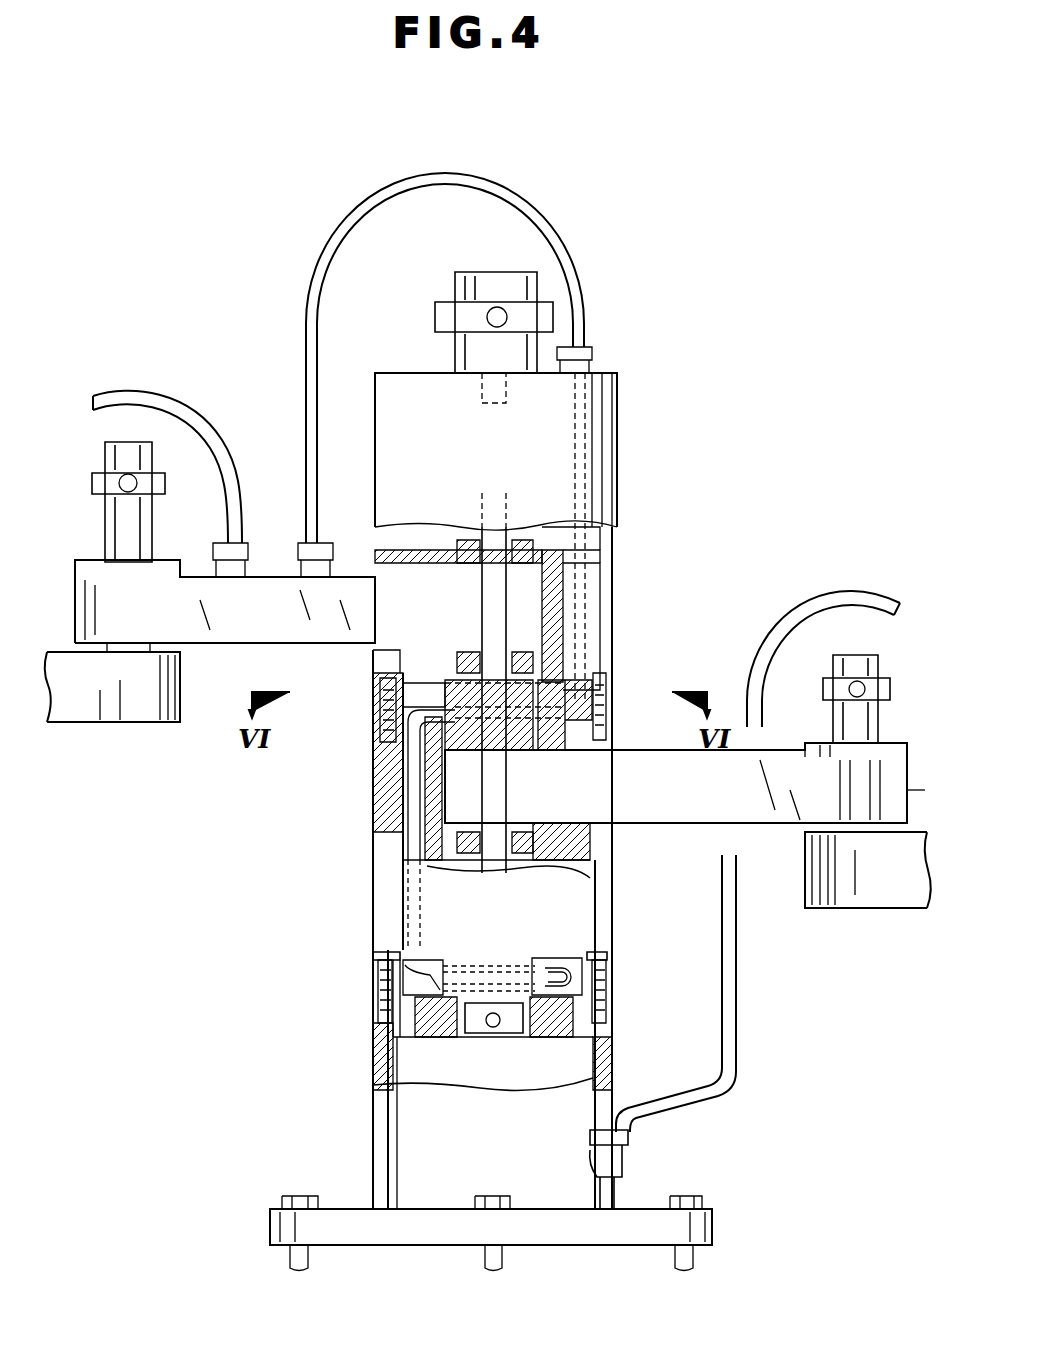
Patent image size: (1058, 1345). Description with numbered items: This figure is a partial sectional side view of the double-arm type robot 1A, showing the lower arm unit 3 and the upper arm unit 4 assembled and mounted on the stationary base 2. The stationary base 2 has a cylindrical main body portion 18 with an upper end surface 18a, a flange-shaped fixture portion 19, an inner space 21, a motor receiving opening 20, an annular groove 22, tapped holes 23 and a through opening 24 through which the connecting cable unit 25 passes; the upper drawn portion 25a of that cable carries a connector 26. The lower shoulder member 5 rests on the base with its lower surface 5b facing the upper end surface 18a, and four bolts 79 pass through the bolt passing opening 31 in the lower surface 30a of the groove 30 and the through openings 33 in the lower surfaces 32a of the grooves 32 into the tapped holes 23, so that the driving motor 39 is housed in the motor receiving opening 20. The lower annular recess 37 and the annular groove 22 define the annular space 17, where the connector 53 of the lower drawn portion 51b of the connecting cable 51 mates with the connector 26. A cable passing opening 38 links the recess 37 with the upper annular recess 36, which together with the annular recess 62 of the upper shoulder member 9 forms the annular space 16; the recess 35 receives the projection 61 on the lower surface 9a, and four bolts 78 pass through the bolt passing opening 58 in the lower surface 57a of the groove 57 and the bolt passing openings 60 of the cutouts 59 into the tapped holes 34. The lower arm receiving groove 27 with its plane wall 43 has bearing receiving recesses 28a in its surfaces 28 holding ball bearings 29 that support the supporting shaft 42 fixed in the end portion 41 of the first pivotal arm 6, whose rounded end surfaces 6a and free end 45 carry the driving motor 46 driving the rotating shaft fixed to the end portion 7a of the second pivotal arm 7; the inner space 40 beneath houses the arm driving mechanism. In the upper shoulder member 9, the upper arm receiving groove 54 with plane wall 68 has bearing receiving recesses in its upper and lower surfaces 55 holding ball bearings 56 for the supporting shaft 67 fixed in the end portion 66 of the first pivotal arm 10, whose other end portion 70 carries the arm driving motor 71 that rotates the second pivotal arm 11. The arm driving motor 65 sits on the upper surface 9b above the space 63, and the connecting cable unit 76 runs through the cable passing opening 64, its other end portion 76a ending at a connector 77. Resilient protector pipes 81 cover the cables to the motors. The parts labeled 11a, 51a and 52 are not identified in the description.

The double-arm type robot 1A is at (752, 241).
The stationary base 2 is at (721, 1191).
The lower arm unit 3 is at (861, 930).
The upper arm unit 4 is at (132, 740).
The lower shoulder member 5 is at (375, 785).
The lower surface of lower shoulder member 5b is at (582, 980).
The first pivotal arm 6 is at (700, 822).
The end surfaces of first pivotal arm 6a is at (912, 790).
The second pivotal arm 7 is at (892, 898).
The end portion of second pivotal arm 7a is at (806, 880).
The upper shoulder member 9 is at (614, 460).
The lower surface of upper shoulder member 9a is at (605, 700).
The upper surface of upper shoulder member 9b is at (598, 365).
The first pivotal arm 10 is at (276, 588).
The second pivotal arm 11 is at (70, 715).
The spacer 11a is at (180, 690).
The annular space 16 is at (420, 660).
The annular space 17 is at (570, 870).
The main body portion 18 is at (615, 1170).
The upper end surface of main body portion 18a is at (375, 1000).
The flange-shaped fixture portion 19 is at (712, 1218).
The motor receiving opening 20 is at (428, 1020).
The inner space 21 is at (484, 1026).
The annular groove 22 is at (575, 1055).
The tapped holes 23 is at (605, 995).
The through opening 24 is at (410, 1080).
The connecting cable unit 25 is at (378, 1060).
The upper drawn portion of connecting cable 25a is at (548, 1025).
The connector 26 is at (548, 970).
The lower arm receiving groove 27 is at (668, 786).
The upper and lower surfaces of lower arm receiving groove 28 is at (612, 750).
The bearing receiving recesses 28a is at (512, 832).
The ball bearings 29 is at (498, 735).
The vertically extending groove 30 is at (372, 890).
The lower surface of groove 30a is at (372, 955).
The bolt passing opening 31 is at (372, 975).
The vertically extending grooves 32 is at (598, 945).
The lower surfaces of grooves 32a is at (598, 958).
The through opening 33 is at (662, 975).
The tapped holes 34 is at (372, 763).
The cylindrical recess 35 is at (555, 735).
The upper annular recess 36 is at (572, 720).
The lower annular cylindrical recess 37 is at (432, 970).
The cable passing opening 38 is at (385, 812).
The driving motor 39 is at (480, 1055).
The inner space 40 is at (548, 896).
The end portion of first pivotal arm 41 is at (420, 850).
The supporting shaft 42 is at (485, 868).
The plane wall 43 is at (372, 805).
The free end of first pivotal arm 45 is at (905, 745).
The driving motor 46 is at (858, 668).
The connecting cable 51 is at (400, 845).
The pipe portion 51a is at (450, 738).
The lower drawn portion of connecting cable 51b is at (418, 955).
The bearing 52 is at (520, 665).
The connector 53 is at (495, 975).
The upper arm receiving groove 54 is at (380, 652).
The upper and lower surfaces of upper arm receiving groove 55 is at (372, 553).
The ball bearings 56 is at (517, 540).
The vertically extending groove 57 is at (610, 625).
The lower surface of groove 57a is at (612, 680).
The bolt passing opening 58 is at (640, 665).
The cutouts 59 is at (378, 682).
The bolt passing opening 60 is at (378, 715).
The cylindrical projection 61 is at (440, 680).
The annular recess 62 is at (445, 655).
The space 63 is at (556, 540).
The cable passing opening 64 is at (578, 620).
The arm driving motor 65 is at (490, 290).
The end portion of first arm 66 is at (580, 600).
The supporting shaft 67 is at (468, 540).
The plane wall 68 is at (580, 590).
The other end portion of first pivotal arm 70 is at (90, 566).
The arm driving motor 71 is at (104, 460).
The connecting cable unit 76 is at (612, 556).
The other end portion of connecting cable unit 76a is at (598, 775).
The connector 77 is at (540, 655).
The bolts 78 is at (598, 650).
The bolts 79 is at (380, 955).
The resilient protector pipes 81 is at (458, 180).